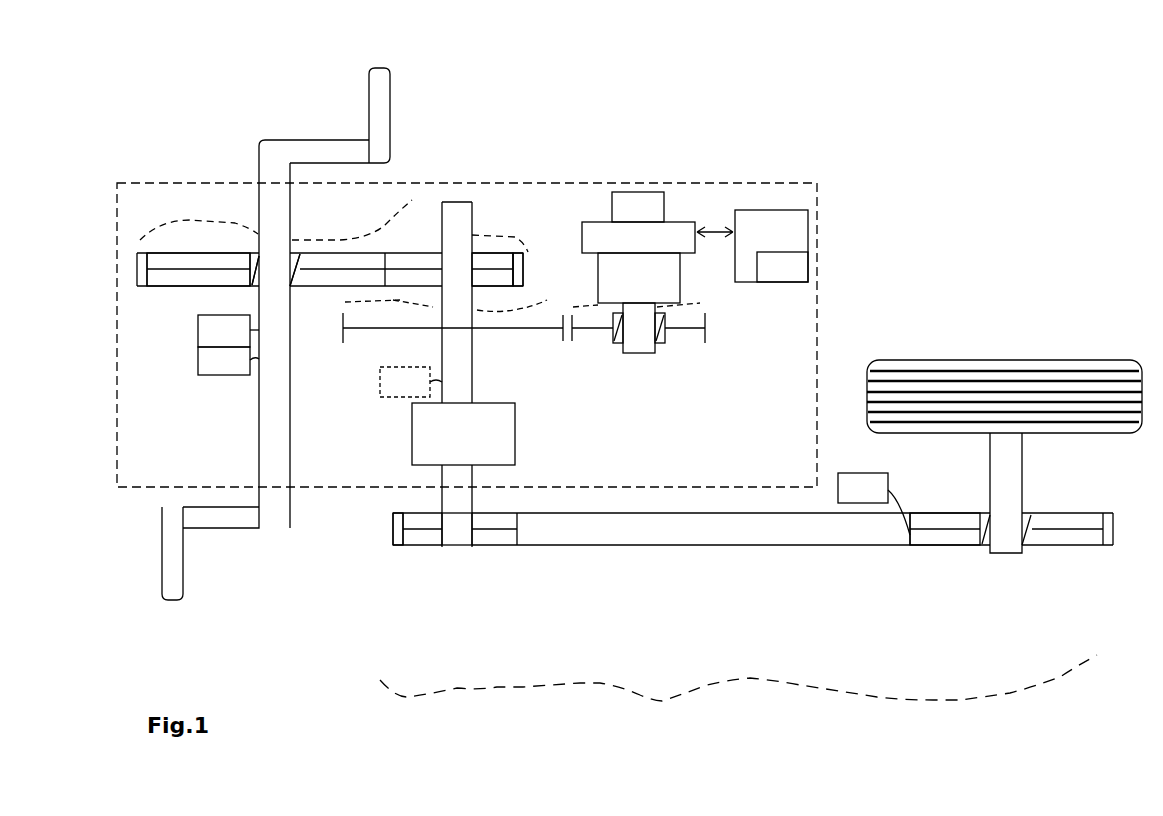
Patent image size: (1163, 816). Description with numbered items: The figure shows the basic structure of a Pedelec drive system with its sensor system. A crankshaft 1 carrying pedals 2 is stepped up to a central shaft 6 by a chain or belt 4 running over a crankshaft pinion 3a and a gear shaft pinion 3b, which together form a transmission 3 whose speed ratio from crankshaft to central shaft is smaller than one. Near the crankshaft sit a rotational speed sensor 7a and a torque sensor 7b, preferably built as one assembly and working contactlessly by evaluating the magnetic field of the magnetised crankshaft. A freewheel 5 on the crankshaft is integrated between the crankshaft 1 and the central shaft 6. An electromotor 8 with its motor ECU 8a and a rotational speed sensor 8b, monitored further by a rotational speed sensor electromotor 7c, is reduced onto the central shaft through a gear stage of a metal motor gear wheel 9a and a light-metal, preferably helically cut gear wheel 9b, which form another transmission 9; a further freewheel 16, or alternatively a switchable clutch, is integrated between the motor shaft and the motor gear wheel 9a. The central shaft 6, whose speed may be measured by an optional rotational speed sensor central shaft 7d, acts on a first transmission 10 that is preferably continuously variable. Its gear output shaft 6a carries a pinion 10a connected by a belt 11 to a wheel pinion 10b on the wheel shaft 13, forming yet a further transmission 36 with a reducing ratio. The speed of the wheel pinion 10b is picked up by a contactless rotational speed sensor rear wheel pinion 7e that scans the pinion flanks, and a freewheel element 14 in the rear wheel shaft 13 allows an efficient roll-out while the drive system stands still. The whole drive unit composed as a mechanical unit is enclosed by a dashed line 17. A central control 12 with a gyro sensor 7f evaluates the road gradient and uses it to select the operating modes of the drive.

The crankshaft 1 is at (268, 242).
The pedal 2 is at (381, 98).
The transmission 3 is at (393, 212).
The crankshaft pinion 3a is at (200, 263).
The gear shaft pinion 3b is at (480, 268).
The belt 4 is at (523, 268).
The freewheel 5 is at (300, 268).
The central shaft 6 is at (450, 220).
The gear output shaft 6a is at (455, 525).
The rotational speed sensor for crankshaft 7a is at (198, 330).
The torque sensor for crankshaft 7b is at (198, 360).
The rotational speed sensor electromotor 7c is at (645, 190).
The rotational speed sensor central shaft 7d is at (380, 381).
The rotational speed sensor rear wheel pinion 7e is at (863, 503).
The gyro sensor 7f is at (808, 267).
The electromotor 8 is at (663, 292).
The motor ECU 8a is at (673, 222).
The rotational speed sensor 8b is at (639, 345).
The transmission 9 is at (562, 302).
The motor gear wheel 9a is at (683, 340).
The gear wheel 9b is at (382, 328).
The first transmission 10 is at (433, 447).
The pinion 10a is at (495, 535).
The wheel pinion 10b is at (950, 535).
The belt 11 is at (397, 533).
The central control 12 is at (797, 220).
The wheel shaft 13 is at (1002, 532).
The freewheel element 14 is at (1033, 530).
The freewheel 16 is at (614, 345).
The dashed line 17 is at (818, 326).
The transmission 36 is at (672, 700).